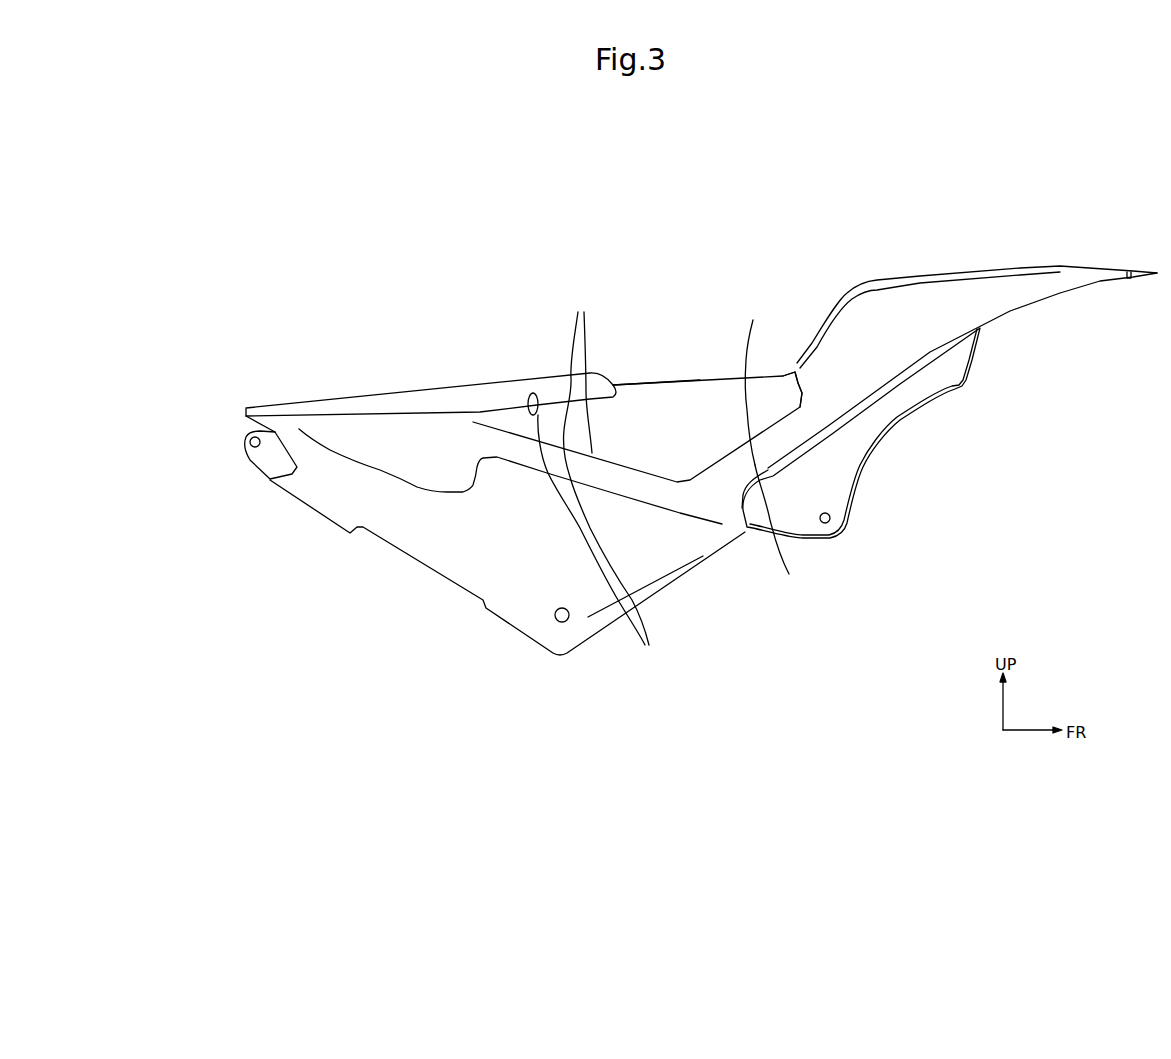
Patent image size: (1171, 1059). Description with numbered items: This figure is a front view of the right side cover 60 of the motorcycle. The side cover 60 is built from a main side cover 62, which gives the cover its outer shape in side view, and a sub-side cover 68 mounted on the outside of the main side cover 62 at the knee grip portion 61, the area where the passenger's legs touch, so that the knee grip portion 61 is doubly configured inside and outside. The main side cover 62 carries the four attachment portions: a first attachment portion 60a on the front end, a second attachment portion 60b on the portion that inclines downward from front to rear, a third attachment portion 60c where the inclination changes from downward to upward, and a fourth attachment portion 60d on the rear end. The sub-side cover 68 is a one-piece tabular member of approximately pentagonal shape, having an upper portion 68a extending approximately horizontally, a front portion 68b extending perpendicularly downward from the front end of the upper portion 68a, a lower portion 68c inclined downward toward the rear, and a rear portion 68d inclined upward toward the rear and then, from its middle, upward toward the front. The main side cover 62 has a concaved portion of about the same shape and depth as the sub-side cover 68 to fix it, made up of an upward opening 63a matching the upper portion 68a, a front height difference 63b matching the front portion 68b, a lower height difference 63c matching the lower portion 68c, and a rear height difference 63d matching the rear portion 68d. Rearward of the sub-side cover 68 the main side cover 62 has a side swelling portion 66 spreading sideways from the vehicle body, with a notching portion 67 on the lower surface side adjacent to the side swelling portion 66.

The side cover 60 is at (802, 148).
The first attachment portion 60a is at (1132, 281).
The second attachment portion 60b is at (830, 522).
The third attachment portion 60c is at (567, 622).
The fourth attachment portion 60d is at (245, 447).
The knee grip portion 61 is at (722, 407).
The main side cover 62 is at (873, 272).
The upward opening 63a is at (673, 381).
The front height difference 63b is at (783, 374).
The lower height difference 63c is at (758, 383).
The rear height difference 63d is at (588, 469).
The side swelling portion 66 is at (522, 538).
The notching portion 67 is at (413, 560).
The sub-side cover 68 is at (688, 434).
The upper portion 68a is at (657, 345).
The front portion 68b is at (802, 390).
The lower portion 68c is at (790, 528).
The rear portion 68d is at (611, 542).